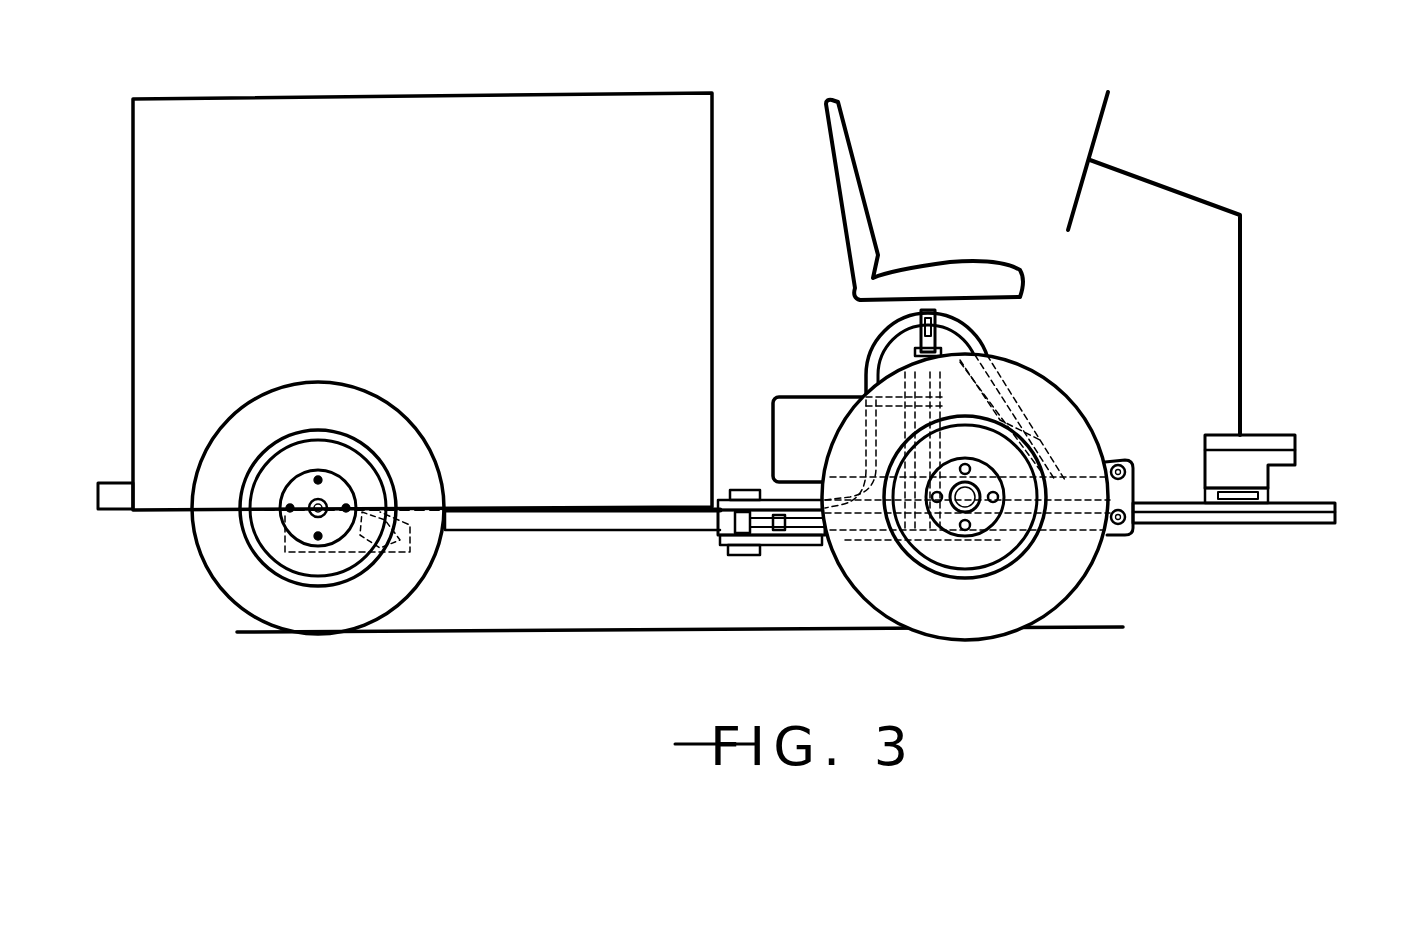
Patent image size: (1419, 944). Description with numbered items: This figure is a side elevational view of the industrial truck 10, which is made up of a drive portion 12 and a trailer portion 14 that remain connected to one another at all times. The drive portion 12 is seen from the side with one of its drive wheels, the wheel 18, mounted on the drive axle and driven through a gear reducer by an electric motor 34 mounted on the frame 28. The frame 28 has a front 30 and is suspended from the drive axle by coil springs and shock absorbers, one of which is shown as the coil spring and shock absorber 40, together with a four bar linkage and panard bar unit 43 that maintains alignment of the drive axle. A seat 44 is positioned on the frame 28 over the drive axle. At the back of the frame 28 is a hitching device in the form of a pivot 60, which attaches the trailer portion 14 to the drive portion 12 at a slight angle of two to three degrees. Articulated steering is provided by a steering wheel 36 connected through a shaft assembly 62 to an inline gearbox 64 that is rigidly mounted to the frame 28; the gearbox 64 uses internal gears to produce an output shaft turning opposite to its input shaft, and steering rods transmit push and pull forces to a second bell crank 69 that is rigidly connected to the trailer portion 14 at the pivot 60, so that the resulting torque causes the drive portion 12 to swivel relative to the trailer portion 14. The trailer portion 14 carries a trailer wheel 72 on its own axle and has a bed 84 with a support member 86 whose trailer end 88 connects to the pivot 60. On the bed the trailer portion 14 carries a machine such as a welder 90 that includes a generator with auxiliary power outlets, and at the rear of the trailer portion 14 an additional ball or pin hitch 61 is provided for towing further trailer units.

The truck 10 is at (1269, 104).
The drive portion 12 is at (1333, 128).
The trailer portion 14 is at (592, 58).
The wheel 18 is at (1062, 388).
The frame 28 is at (1192, 526).
The front 30 is at (1300, 525).
The electric motor 34 is at (813, 395).
The steering wheel 36 is at (1098, 134).
The coil spring and shock absorber 40 is at (955, 392).
The four bar linkage and panard bar unit 43 is at (1065, 535).
The seat 44 is at (870, 172).
The pivot 60 is at (742, 548).
The ball or pin hitch 61 is at (128, 511).
The shaft assembly 62 is at (1240, 238).
The inline gearbox 64 is at (1290, 440).
The second bell crank 69 is at (723, 490).
The wheel 72 is at (225, 588).
The bed 84 is at (545, 508).
The support member 86 is at (500, 528).
The trailer end 88 is at (708, 525).
The welder 90 is at (712, 125).